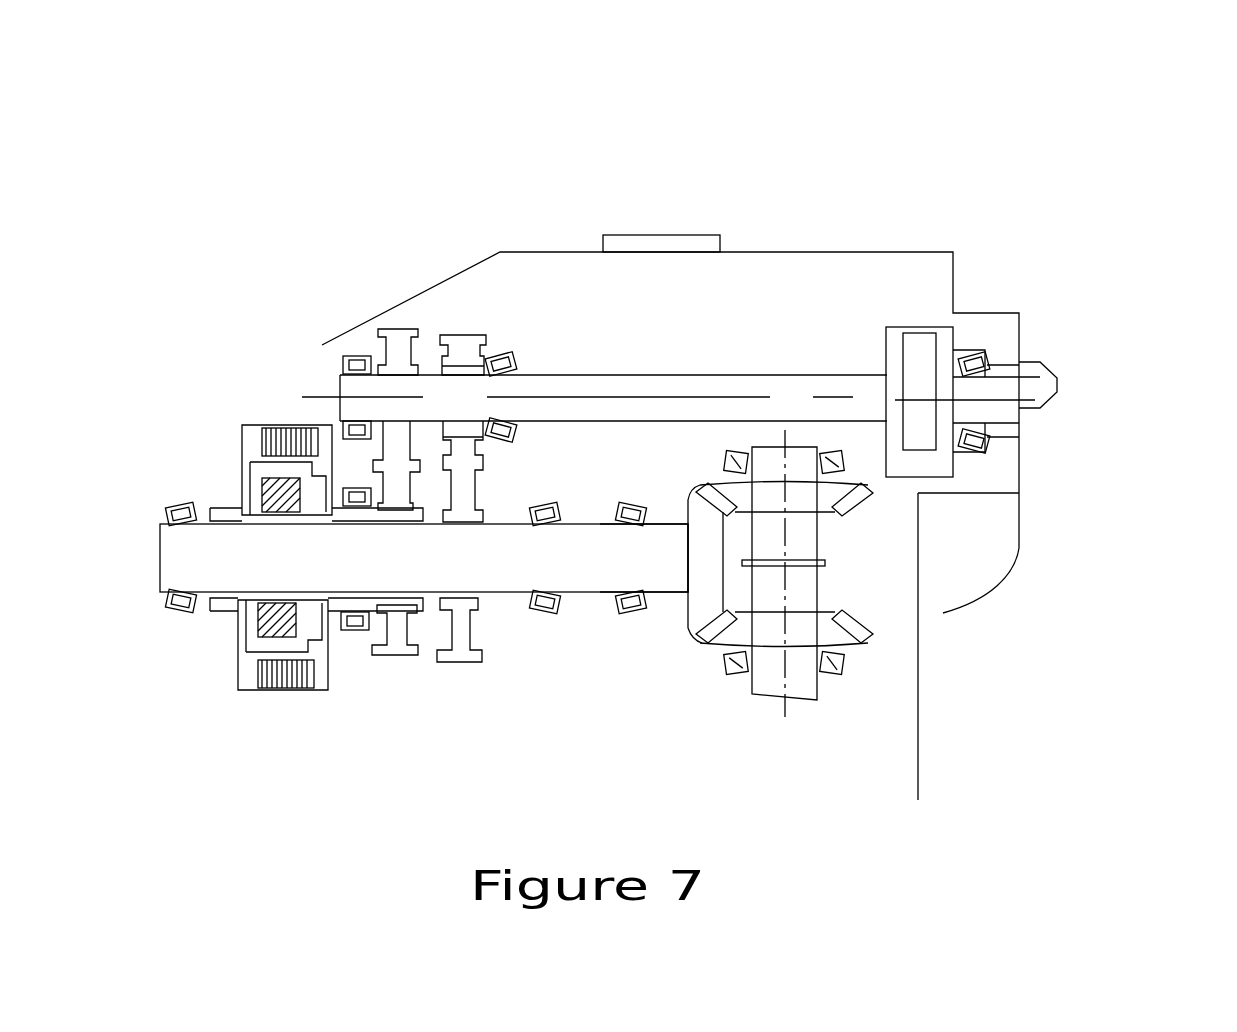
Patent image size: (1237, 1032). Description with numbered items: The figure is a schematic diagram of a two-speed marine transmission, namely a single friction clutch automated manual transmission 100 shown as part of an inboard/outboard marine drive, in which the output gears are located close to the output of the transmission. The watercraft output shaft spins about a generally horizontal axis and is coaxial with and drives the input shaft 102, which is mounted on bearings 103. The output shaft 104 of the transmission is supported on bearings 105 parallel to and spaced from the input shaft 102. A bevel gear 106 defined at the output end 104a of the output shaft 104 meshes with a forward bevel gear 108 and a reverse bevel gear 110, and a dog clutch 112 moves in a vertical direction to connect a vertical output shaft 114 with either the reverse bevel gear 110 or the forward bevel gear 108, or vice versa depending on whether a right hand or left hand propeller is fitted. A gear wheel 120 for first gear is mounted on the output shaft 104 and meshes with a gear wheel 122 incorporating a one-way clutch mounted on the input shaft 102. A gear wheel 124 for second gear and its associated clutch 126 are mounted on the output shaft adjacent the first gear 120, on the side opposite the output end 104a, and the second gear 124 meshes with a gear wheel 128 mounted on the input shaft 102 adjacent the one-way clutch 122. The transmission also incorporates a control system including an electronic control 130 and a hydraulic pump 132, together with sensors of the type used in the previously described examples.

The single friction clutch automated manual transmission 100 is at (607, 152).
The input shaft 102 is at (753, 377).
The bearings 103 is at (507, 347).
The output shaft 104 is at (578, 595).
The output end 104a is at (705, 588).
The bearings 105 is at (547, 507).
The bevel gear 106 is at (683, 560).
The forward bevel gear 108 is at (870, 507).
The reverse bevel gear 110 is at (870, 617).
The dog clutch 112 is at (835, 562).
The vertical output shaft 114 is at (805, 685).
The gear wheel for first gear 120 is at (458, 660).
The gear wheel incorporating a one-way clutch 122 is at (463, 365).
The gear wheel for second gear 124 is at (395, 653).
The clutch 126 is at (278, 427).
The gear wheel 128 is at (370, 327).
The electronic control 130 is at (670, 228).
The hydraulic pump 132 is at (925, 322).